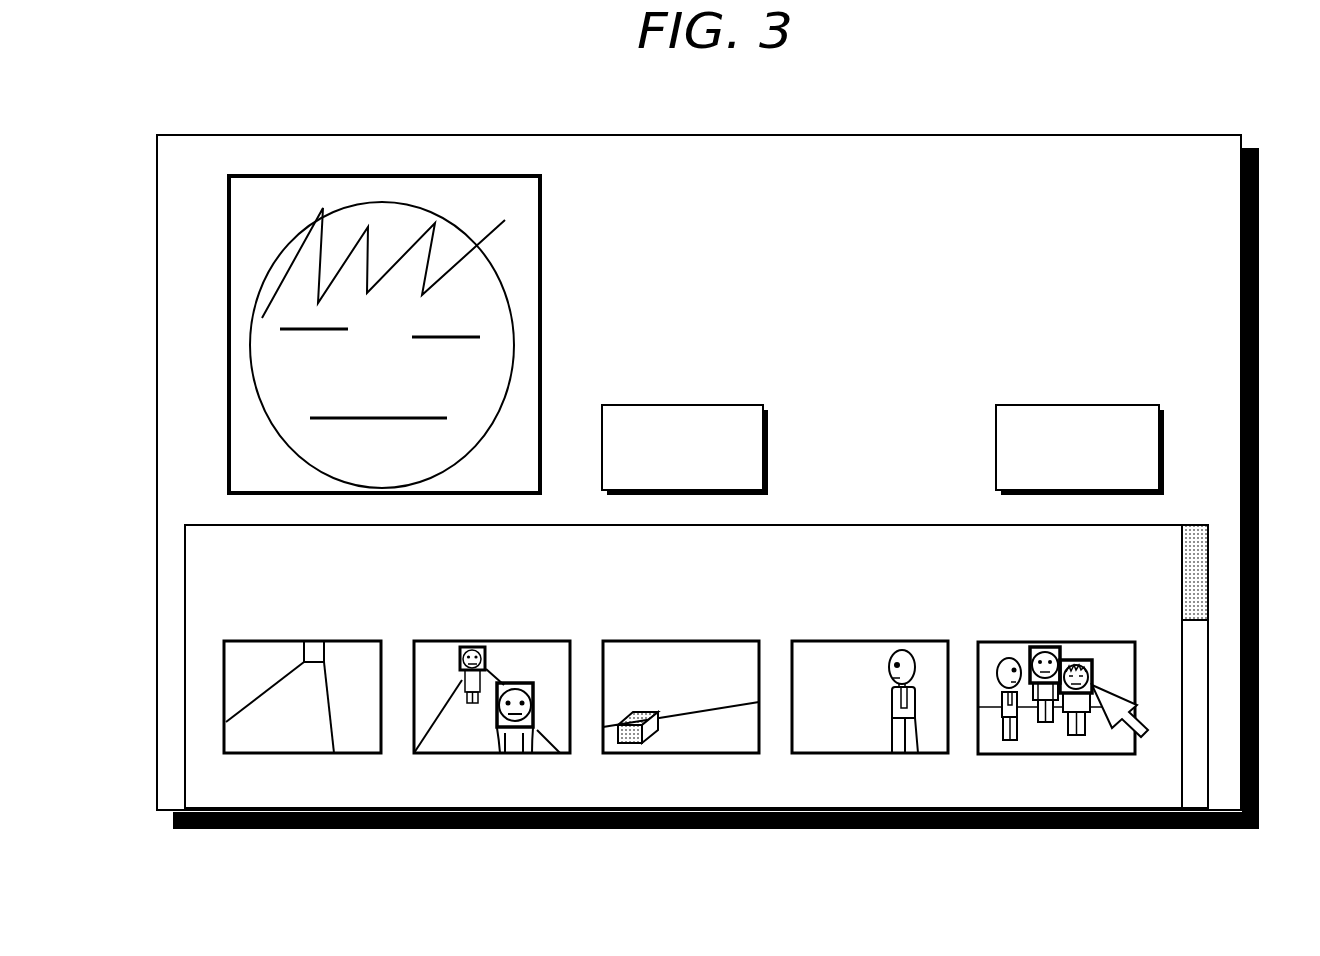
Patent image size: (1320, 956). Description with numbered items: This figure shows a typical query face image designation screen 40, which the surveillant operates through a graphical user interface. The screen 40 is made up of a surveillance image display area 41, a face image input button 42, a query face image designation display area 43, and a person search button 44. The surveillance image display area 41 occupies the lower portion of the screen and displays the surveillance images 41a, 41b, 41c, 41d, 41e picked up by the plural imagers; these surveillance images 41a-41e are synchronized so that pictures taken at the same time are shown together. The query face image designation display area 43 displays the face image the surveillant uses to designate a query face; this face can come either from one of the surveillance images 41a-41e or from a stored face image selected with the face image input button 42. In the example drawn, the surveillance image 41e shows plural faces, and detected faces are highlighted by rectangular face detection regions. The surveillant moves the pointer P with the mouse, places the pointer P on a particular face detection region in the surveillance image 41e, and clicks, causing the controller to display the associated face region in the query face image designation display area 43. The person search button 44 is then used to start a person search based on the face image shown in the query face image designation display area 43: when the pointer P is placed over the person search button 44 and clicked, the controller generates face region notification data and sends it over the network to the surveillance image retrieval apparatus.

The query face image designation screen 40 is at (797, 124).
The surveillance image display area 41 is at (868, 525).
The surveillance image 41a is at (318, 641).
The surveillance image 41b is at (505, 641).
The surveillance image 41c is at (683, 641).
The surveillance image 41d is at (880, 641).
The surveillance image 41e is at (1057, 642).
The face image input button 42 is at (703, 405).
The query face image designation display area 43 is at (541, 228).
The person search button 44 is at (1091, 405).
The pointer P is at (1143, 738).